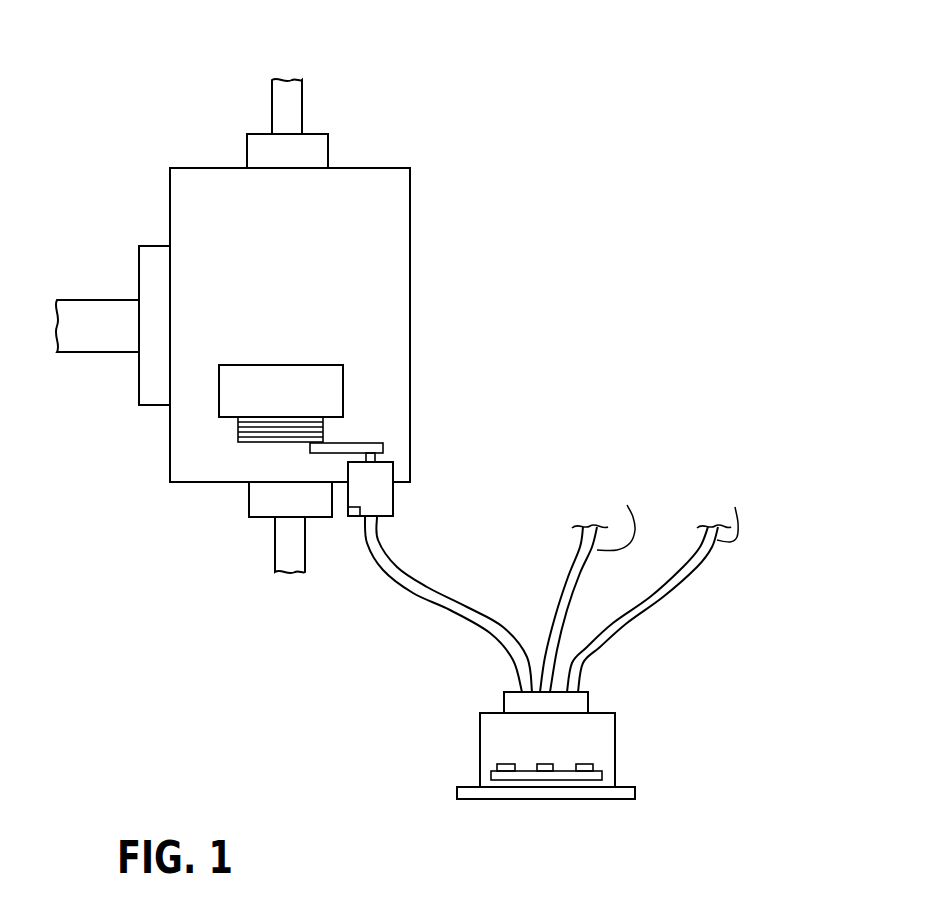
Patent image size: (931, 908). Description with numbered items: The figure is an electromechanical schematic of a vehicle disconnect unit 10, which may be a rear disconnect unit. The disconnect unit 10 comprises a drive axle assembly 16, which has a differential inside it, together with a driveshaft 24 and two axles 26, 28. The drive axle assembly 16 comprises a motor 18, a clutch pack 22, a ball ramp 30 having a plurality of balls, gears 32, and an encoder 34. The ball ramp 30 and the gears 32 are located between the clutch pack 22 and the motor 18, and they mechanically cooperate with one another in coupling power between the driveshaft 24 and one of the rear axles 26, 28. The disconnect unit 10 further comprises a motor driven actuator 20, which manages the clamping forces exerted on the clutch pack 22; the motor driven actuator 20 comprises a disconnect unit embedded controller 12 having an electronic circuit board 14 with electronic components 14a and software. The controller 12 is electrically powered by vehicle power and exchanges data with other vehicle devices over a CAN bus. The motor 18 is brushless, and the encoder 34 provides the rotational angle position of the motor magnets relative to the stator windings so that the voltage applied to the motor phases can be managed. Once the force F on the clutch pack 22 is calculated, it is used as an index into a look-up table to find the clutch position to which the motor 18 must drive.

The vehicle disconnect unit 10 is at (513, 80).
The disconnect unit embedded controller 12 is at (480, 748).
The electronic circuit board 14 is at (603, 771).
The electronic components 14a is at (585, 765).
The drive axle assembly 16 is at (410, 320).
The motor 18 is at (393, 505).
The motor driven actuator 20 is at (503, 483).
The clutch pack 22 is at (258, 365).
The driveshaft 24 is at (90, 300).
The axle 26 is at (303, 100).
The axle 28 is at (275, 543).
The ball ramp 30 is at (238, 428).
The gears 32 is at (310, 450).
The encoder 34 is at (393, 472).
The force F is at (318, 362).